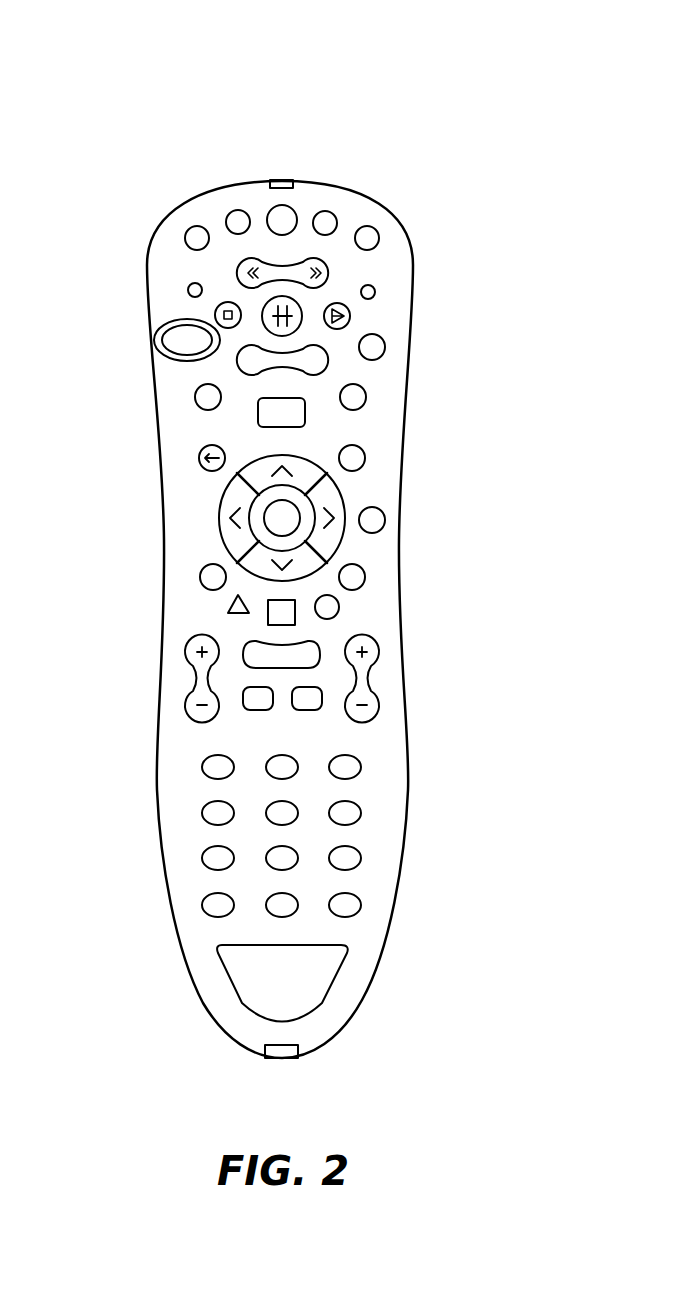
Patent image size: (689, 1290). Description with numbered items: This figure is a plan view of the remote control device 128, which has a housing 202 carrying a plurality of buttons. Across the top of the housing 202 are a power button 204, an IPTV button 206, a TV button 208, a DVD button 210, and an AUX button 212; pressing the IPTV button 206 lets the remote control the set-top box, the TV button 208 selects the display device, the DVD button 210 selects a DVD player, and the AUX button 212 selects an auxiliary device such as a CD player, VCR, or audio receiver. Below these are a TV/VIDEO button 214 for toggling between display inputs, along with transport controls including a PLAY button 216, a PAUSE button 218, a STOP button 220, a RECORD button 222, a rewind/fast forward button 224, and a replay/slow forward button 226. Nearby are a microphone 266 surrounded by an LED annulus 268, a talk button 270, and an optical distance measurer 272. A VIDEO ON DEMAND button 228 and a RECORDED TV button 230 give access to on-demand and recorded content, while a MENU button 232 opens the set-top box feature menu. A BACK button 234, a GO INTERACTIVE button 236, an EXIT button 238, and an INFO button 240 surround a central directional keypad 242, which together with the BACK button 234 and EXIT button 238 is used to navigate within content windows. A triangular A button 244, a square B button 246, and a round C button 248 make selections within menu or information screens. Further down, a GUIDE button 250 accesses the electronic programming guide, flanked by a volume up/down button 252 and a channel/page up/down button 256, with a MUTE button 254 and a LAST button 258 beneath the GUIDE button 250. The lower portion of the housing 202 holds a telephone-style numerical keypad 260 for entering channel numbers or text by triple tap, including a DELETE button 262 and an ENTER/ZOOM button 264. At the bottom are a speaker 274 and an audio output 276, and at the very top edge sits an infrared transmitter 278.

The remote control device 128 is at (549, 118).
The housing 202 is at (403, 250).
The power button 204 is at (275, 212).
The IPTV button 206 is at (195, 235).
The television (TV) button 208 is at (235, 220).
The digital video disc (DVD) button 210 is at (330, 216).
The auxiliary (AUX) button 212 is at (370, 233).
The TV/VIDEO button 214 is at (302, 316).
The PLAY button 216 is at (349, 315).
The PAUSE button 218 is at (370, 291).
The STOP button 220 is at (226, 314).
The RECORD button 222 is at (193, 289).
The rewind (REW)/fast forward (FF) button 224 is at (243, 275).
The replay/slow forward (FWD) button 226 is at (248, 362).
The VIDEO ON DEMAND button 228 is at (207, 397).
The RECORDED TV button 230 is at (360, 397).
The MENU button 232 is at (262, 422).
The BACK button 234 is at (212, 459).
The GO INTERACTIVE button 236 is at (355, 463).
The EXIT button 238 is at (213, 582).
The INFO button 240 is at (352, 585).
The directional keypad 242 is at (221, 515).
The triangular A button 244 is at (232, 610).
The square B button 246 is at (266, 626).
The round C button 248 is at (333, 612).
The GUIDE button 250 is at (262, 663).
The volume (VOL) up/down button 252 is at (198, 663).
The MUTE button 254 is at (257, 707).
The channel/page (CH/PG) up/down button 256 is at (368, 663).
The LAST button 258 is at (308, 706).
The numerical keypad 260 is at (358, 748).
The DELETE button 262 is at (213, 905).
The ENTER/ZOOM button 264 is at (348, 913).
The microphone 266 is at (163, 326).
The light emitting diode (LED) annulus 268 is at (163, 346).
The talk button 270 is at (372, 523).
The optical distance measurer 272 is at (380, 347).
The speaker 274 is at (253, 987).
The audio output 276 is at (283, 1052).
The infrared (IR) transmitter 278 is at (288, 181).